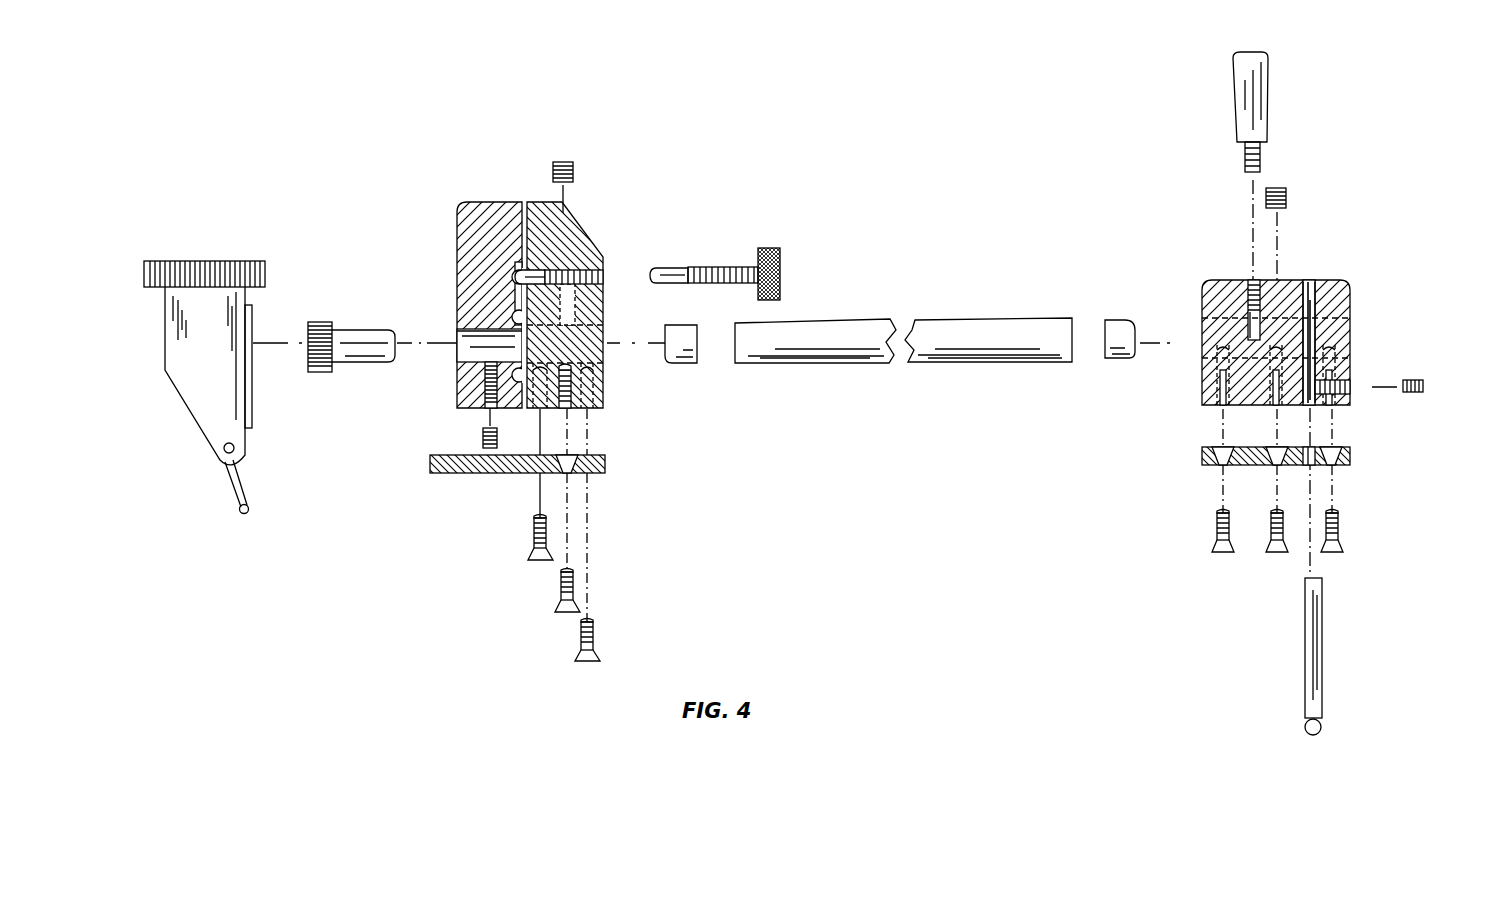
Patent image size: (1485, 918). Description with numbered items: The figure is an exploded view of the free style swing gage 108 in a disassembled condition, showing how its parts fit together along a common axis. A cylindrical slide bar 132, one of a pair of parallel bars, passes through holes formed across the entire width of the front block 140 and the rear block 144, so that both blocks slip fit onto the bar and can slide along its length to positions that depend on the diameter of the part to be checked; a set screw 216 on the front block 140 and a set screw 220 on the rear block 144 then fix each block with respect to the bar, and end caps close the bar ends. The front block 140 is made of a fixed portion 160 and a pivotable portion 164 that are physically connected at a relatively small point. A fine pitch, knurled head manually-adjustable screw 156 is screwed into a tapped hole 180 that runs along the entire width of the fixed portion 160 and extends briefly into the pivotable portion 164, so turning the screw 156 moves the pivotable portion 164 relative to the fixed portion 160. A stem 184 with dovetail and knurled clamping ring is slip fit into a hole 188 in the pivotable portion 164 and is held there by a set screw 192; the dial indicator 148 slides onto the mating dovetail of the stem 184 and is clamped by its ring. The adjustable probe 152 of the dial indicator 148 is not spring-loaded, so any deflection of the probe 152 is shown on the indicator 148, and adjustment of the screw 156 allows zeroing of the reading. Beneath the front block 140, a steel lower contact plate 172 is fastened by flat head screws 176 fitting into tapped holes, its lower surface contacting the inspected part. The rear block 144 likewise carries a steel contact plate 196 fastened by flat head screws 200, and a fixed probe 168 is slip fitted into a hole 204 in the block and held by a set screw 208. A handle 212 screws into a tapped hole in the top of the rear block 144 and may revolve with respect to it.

The free style swing gage 108 is at (458, 136).
The cylindrical slide bar 132 is at (965, 363).
The front block 140 is at (603, 382).
The rear block 144 is at (1340, 284).
The dial indicator 148 is at (190, 262).
The adjustable probe 152 is at (247, 492).
The manually-adjustable screw 156 is at (774, 248).
The fixed portion 160 is at (572, 232).
The pivotable portion 164 is at (491, 202).
The fixed probe 168 is at (1320, 640).
The lower contact plate 172 is at (431, 463).
The flat head screws 176 is at (560, 584).
The tapped hole 180 is at (604, 277).
The stem 184 is at (363, 326).
The hole 188 is at (456, 345).
The set screw 192 is at (481, 436).
The steel contact plate 196 is at (1350, 458).
The flat head screws 200 is at (1270, 538).
The hole 204 is at (1312, 408).
The set screw 208 is at (1418, 378).
The handle 212 is at (1266, 112).
The set screw 216 is at (574, 170).
The set screw 220 is at (1288, 196).